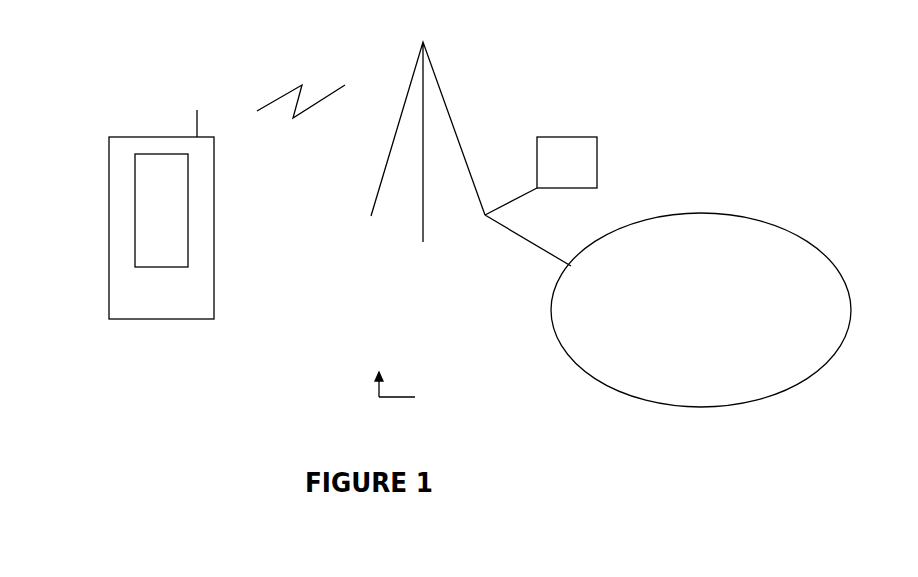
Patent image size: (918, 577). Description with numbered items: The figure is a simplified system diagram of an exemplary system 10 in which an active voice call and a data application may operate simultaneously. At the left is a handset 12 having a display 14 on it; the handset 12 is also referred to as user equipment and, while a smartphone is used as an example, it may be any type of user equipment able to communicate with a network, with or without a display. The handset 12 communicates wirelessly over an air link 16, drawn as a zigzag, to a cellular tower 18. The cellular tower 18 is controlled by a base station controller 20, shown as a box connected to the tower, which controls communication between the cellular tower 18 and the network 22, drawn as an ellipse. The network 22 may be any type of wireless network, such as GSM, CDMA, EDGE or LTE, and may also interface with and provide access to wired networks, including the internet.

The system 10 is at (415, 389).
The handset 12 is at (128, 293).
The display 14 is at (144, 198).
The air link 16 is at (301, 71).
The cellular tower 18 is at (440, 102).
The base station controller 20 is at (587, 145).
The network 22 is at (745, 379).